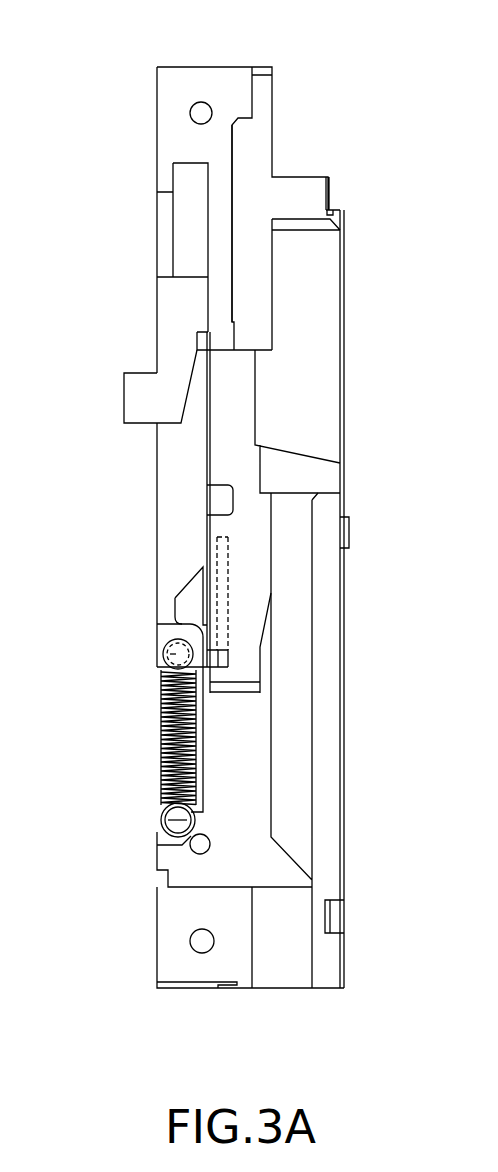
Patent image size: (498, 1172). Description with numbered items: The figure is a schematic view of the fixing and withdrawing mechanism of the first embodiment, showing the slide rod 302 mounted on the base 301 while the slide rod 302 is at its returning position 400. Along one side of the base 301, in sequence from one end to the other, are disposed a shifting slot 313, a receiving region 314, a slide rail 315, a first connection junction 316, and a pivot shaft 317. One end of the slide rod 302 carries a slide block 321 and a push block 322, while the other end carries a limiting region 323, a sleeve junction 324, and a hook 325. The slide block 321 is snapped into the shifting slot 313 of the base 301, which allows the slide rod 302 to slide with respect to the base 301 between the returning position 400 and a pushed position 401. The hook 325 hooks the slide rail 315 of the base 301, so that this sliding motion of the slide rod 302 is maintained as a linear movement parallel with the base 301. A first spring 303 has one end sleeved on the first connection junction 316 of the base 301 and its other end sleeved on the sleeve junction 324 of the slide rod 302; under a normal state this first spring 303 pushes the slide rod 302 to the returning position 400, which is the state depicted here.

The base 301 is at (150, 63).
The slide rod 302 is at (155, 501).
The first spring 303 is at (165, 740).
The shifting slot 313 is at (188, 227).
The receiving region 314 is at (222, 497).
The slide rail 315 is at (222, 605).
The first connection junction 316 is at (163, 822).
The pivot shaft 317 is at (200, 846).
The slide block 321 is at (172, 323).
The push block 322 is at (137, 392).
The limiting region 323 is at (175, 606).
The sleeve junction 324 is at (165, 653).
The hook 325 is at (228, 658).
The returning position 400 is at (157, 667).
The pushed position 401 is at (157, 163).